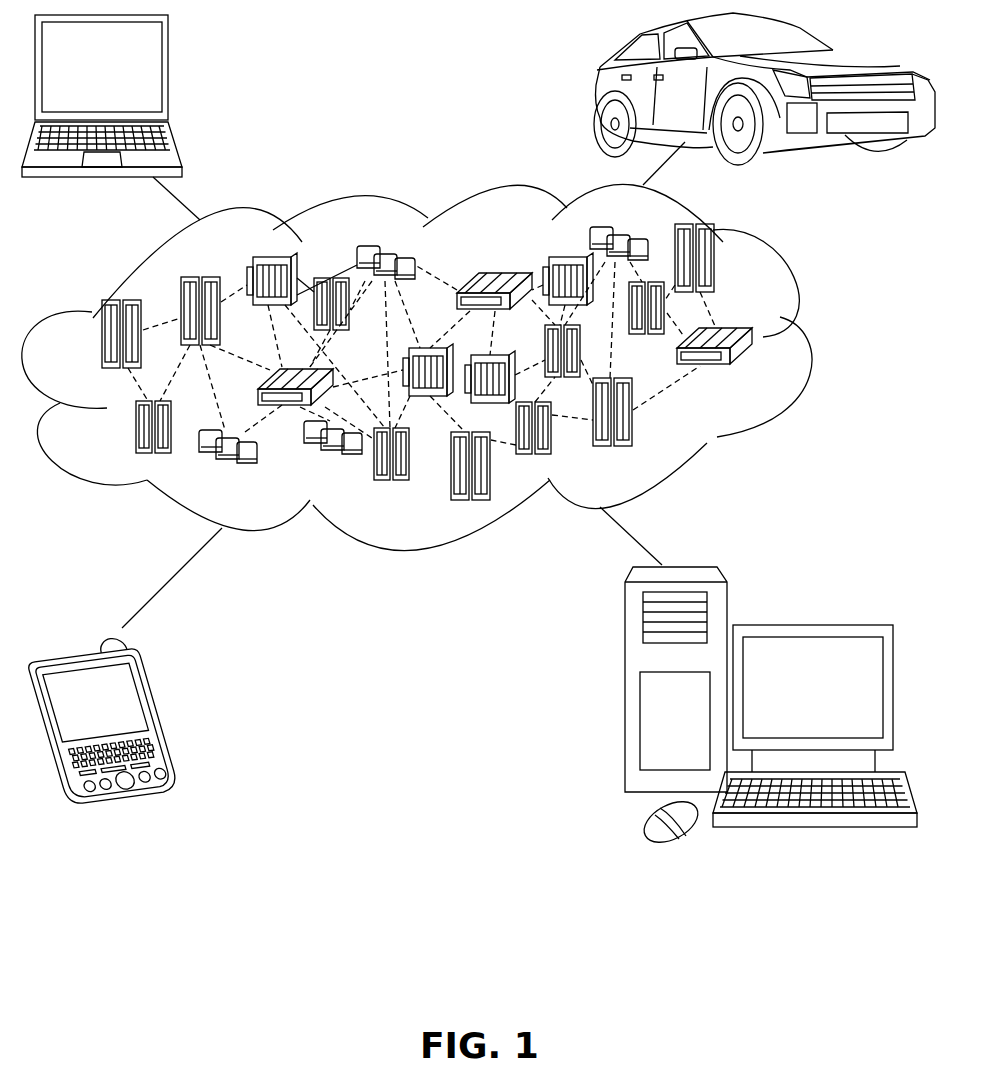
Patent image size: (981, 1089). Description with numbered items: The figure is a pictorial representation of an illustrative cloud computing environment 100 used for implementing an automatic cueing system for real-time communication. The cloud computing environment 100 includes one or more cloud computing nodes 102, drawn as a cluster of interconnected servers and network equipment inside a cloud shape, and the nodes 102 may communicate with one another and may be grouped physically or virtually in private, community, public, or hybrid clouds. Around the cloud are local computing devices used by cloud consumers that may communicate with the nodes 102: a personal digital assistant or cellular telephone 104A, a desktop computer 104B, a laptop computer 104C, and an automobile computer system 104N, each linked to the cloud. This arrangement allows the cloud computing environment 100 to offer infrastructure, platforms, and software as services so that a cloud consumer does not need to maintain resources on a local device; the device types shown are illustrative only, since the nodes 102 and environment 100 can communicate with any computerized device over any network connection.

The cloud computing environment 100 is at (810, 342).
The cloud computing nodes 102 is at (766, 377).
The personal digital assistant or cellular telephone 104A is at (160, 714).
The desktop computer 104B is at (810, 624).
The laptop computer 104C is at (168, 76).
The automobile computer system 104N is at (597, 91).